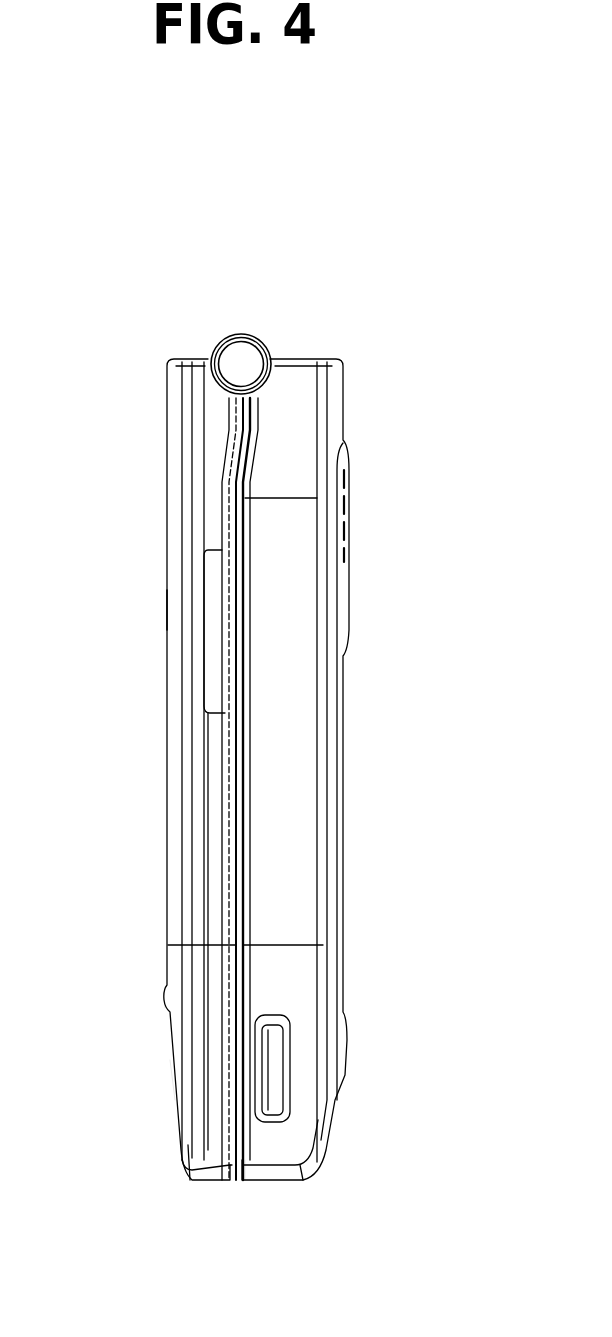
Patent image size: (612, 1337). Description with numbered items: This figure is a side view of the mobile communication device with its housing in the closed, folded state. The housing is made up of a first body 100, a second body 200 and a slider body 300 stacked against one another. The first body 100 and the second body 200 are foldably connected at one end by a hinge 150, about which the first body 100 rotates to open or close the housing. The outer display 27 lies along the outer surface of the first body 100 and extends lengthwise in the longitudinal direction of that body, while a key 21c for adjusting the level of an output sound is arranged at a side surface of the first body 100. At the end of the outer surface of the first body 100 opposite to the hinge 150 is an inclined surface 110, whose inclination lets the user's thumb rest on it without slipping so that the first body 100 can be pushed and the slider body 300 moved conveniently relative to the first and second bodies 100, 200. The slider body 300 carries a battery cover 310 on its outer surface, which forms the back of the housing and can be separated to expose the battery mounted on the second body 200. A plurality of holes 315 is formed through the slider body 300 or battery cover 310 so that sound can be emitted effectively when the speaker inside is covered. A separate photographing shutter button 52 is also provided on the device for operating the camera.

The first body 100 is at (150, 512).
The inclined surface 110 is at (172, 1080).
The hinge 150 is at (239, 356).
The second body 200 is at (365, 391).
The slider body 300 is at (331, 1175).
The battery cover 310 is at (345, 580).
The holes 315 is at (345, 512).
The outer display 27 is at (167, 608).
The key 21c is at (212, 683).
The photographing shutter button 52 is at (275, 1046).